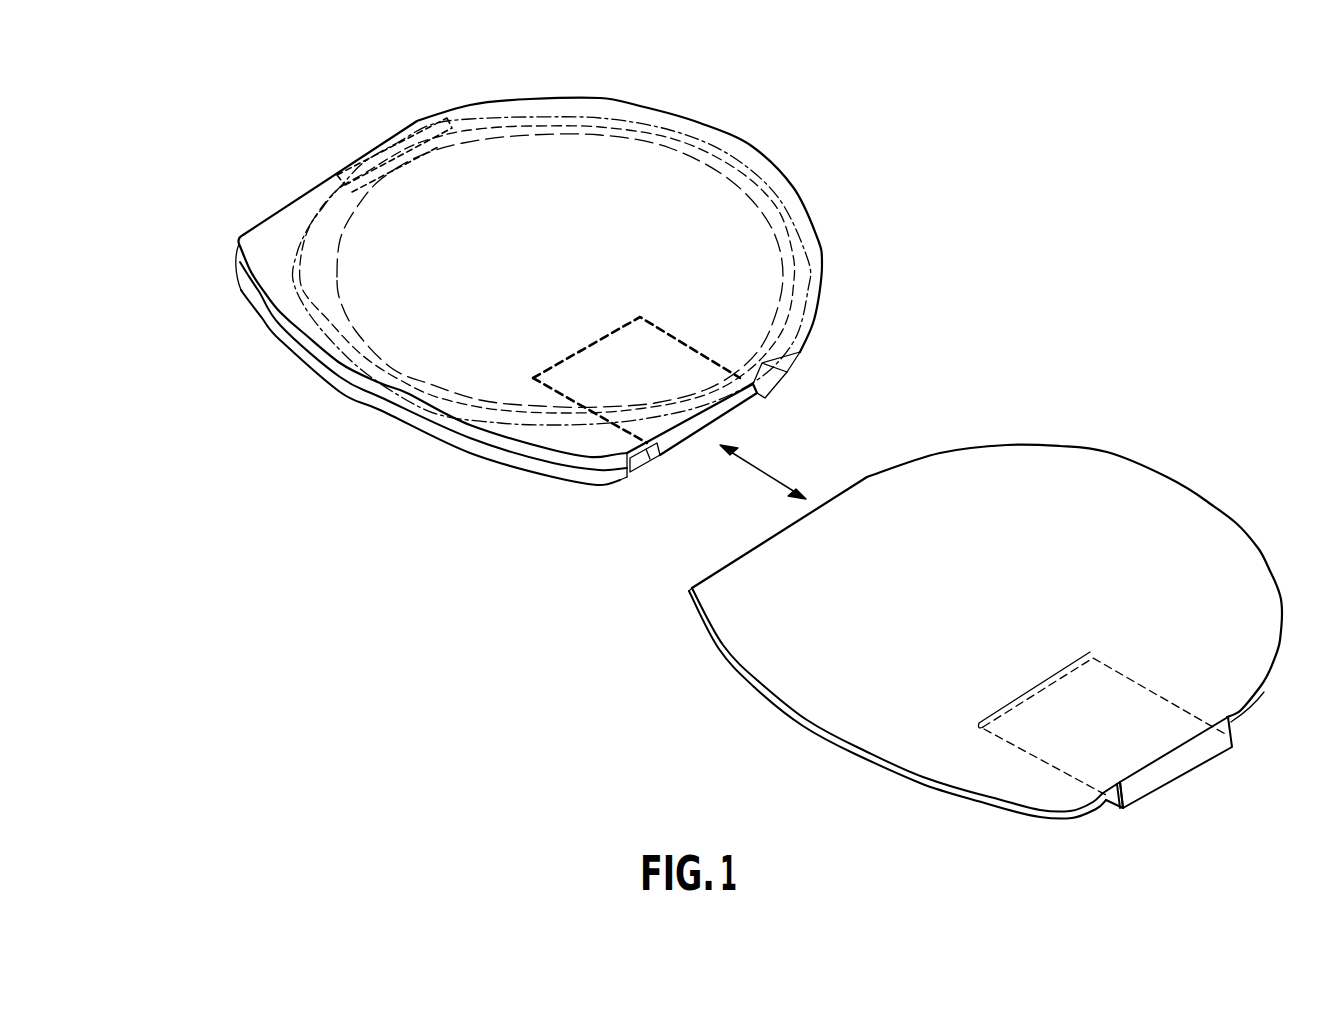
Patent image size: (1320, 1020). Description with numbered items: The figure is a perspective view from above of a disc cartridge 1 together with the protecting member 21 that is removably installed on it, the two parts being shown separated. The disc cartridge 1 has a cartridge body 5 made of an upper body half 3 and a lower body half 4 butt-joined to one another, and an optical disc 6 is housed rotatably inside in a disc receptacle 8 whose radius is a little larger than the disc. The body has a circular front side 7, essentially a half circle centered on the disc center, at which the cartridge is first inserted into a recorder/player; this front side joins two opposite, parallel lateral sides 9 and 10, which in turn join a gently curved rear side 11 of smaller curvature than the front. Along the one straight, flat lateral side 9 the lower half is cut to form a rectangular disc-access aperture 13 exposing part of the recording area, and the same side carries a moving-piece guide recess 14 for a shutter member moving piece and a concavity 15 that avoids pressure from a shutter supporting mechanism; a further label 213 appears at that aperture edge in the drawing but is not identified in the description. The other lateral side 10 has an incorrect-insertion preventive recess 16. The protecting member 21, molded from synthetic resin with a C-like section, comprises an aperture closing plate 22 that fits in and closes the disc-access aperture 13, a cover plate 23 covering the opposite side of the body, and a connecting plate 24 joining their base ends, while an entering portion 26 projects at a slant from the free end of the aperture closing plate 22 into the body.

The disc cartridge 1 is at (507, 282).
The upper body half 3 is at (235, 262).
The lower body half 4 is at (241, 290).
The cartridge body 5 is at (196, 322).
The optical disc 6 is at (548, 156).
The circular front side 7 is at (748, 155).
The disc receptacle 8 is at (648, 150).
The lateral side 9 is at (617, 474).
The lateral side 10 is at (289, 208).
The rear side 11 is at (447, 439).
The disc-access aperture 13 is at (727, 404).
The moving-piece guide recess 14 is at (792, 374).
The concavity 15 is at (648, 463).
The incorrect-insertion preventive recess 16 is at (368, 168).
The edge of recess 213 is at (762, 394).
The protecting member 21 is at (1030, 460).
The aperture closing plate 22 is at (1100, 802).
The cover plate 23 is at (820, 718).
The connecting plate 24 is at (1178, 755).
The entering portion 26 is at (985, 722).